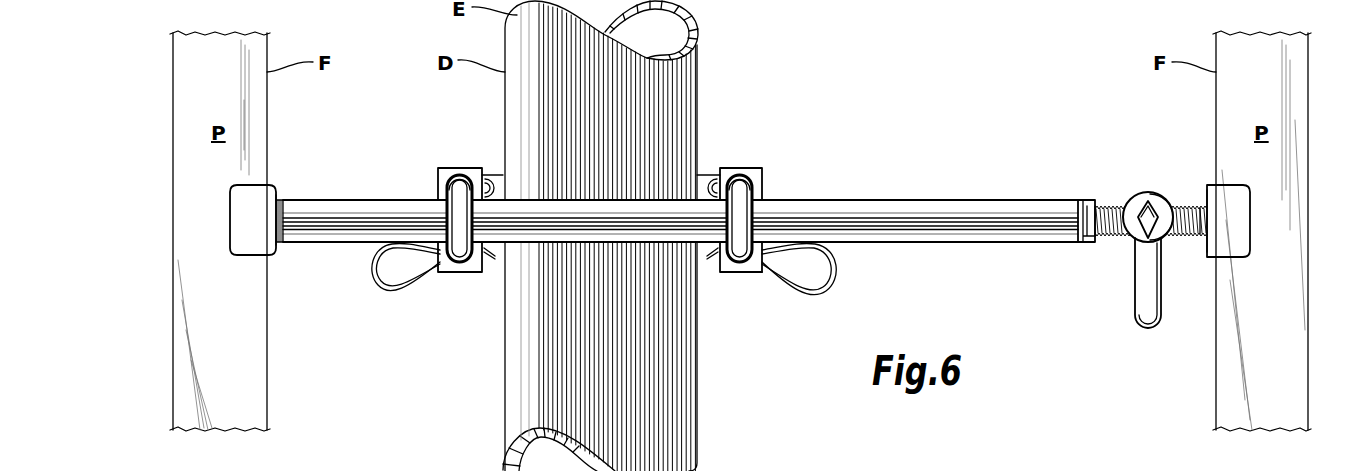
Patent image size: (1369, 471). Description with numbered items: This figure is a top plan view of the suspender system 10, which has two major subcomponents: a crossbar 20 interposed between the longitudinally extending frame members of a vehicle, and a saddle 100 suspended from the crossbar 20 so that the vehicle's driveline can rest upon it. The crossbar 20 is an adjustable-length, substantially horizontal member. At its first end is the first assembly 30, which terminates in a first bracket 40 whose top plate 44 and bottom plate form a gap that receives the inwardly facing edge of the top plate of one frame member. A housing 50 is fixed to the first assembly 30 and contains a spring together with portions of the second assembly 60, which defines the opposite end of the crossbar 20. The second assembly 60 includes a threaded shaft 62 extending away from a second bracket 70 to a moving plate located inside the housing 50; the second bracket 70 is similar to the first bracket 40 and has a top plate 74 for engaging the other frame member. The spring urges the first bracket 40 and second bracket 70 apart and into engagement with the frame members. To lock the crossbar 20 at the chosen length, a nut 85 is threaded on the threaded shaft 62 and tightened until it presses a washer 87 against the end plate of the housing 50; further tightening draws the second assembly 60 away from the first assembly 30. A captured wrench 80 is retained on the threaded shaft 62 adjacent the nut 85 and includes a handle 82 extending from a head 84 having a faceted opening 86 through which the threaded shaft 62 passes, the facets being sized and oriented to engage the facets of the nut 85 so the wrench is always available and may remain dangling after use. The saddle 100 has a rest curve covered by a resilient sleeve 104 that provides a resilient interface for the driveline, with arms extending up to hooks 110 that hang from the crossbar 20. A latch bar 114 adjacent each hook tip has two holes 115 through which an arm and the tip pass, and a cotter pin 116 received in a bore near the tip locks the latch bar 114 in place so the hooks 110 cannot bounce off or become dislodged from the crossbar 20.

The suspender system 10 is at (869, 77).
The crossbar 20 is at (953, 178).
The first assembly 30 is at (283, 200).
The first bracket 40 is at (277, 257).
The top plate 44 is at (240, 224).
The housing 50 is at (873, 208).
The second assembly 60 is at (1206, 207).
The threaded shaft 62 is at (1116, 207).
The second bracket 70 is at (1208, 258).
The top plate 74 is at (1245, 223).
The captured wrench 80 is at (1130, 330).
The handle 82 is at (1142, 295).
The head 84 is at (1155, 197).
The nut 85 is at (1090, 237).
The faceted opening 86 is at (1143, 205).
The washer 87 is at (1080, 200).
The saddle 100 is at (742, 290).
The resilient sleeve 104 is at (494, 175).
The hooks 110 is at (447, 215).
The latch bar 114 is at (465, 172).
The holes 115 is at (450, 178).
The cotter pin 116 is at (398, 292).